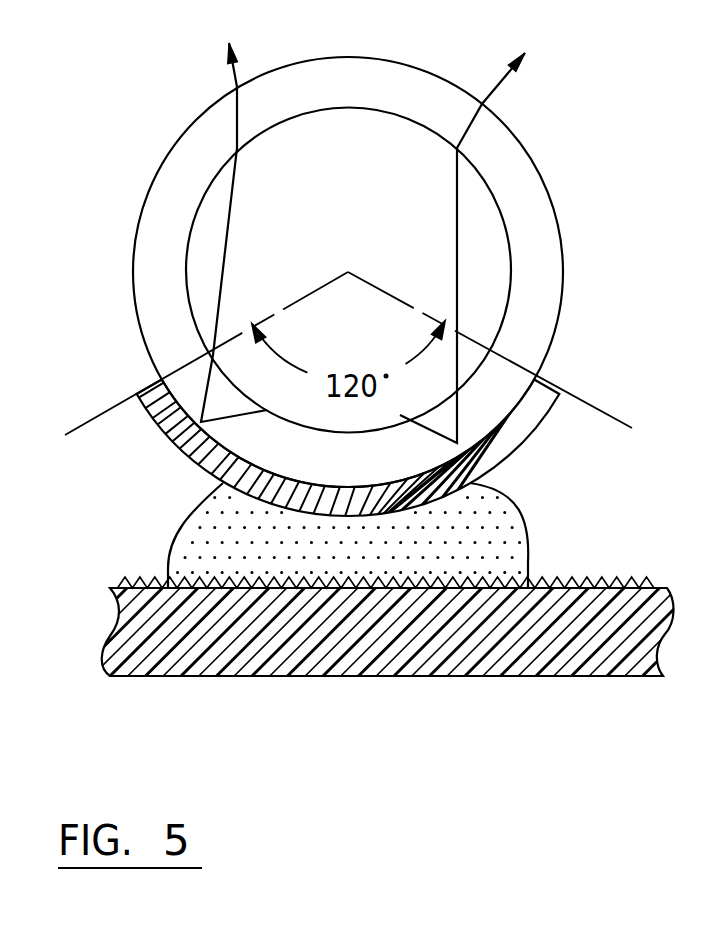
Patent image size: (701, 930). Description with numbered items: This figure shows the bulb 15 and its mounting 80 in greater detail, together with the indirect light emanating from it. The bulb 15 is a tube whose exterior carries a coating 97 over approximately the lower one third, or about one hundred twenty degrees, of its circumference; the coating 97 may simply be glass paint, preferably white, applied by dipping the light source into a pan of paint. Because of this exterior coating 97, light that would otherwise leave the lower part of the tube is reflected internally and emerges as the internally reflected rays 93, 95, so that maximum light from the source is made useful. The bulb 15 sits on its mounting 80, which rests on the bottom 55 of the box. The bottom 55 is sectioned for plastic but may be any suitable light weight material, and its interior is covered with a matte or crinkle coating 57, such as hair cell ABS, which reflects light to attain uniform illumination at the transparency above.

The bulb 15 is at (147, 190).
The internally reflected ray 93 is at (237, 193).
The internally reflected ray 95 is at (456, 191).
The exterior coating 97 is at (174, 428).
The mounting 80 is at (496, 525).
The matte or crinkle coating 57 is at (537, 578).
The bottom 55 is at (120, 600).